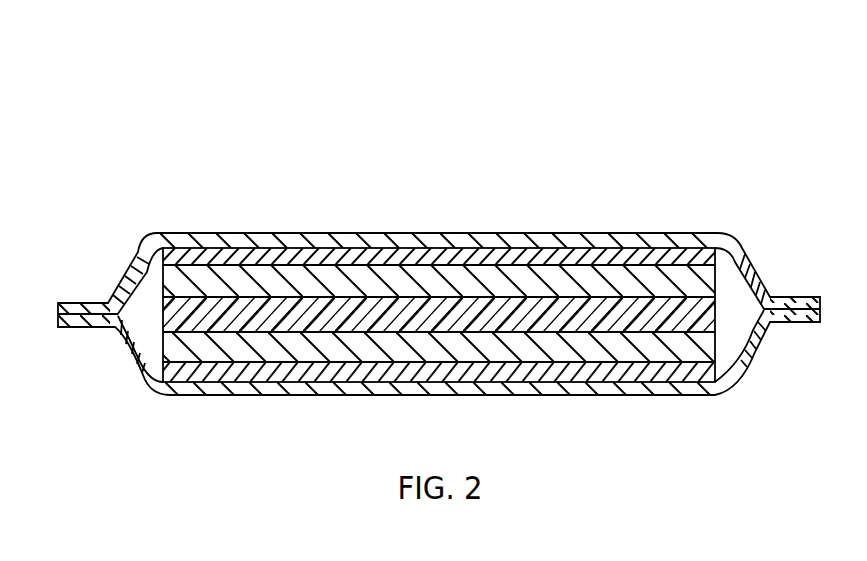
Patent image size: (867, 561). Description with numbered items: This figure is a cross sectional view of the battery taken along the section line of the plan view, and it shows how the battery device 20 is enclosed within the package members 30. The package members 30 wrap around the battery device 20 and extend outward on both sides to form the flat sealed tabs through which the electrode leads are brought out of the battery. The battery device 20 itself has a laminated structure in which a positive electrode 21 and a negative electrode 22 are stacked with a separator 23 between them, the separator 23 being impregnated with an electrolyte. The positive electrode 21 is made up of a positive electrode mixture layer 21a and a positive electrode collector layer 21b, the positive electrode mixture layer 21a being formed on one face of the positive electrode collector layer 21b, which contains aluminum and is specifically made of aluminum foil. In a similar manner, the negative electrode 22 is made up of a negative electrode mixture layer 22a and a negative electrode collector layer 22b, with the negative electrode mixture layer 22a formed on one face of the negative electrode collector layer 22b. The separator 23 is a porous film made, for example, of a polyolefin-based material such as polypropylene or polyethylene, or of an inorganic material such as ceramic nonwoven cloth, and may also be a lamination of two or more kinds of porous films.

The battery device 20 is at (720, 98).
The positive electrode 21 is at (380, 159).
The positive electrode mixture layer 21a is at (208, 275).
The positive electrode collector layer 21b is at (317, 256).
The negative electrode 22 is at (617, 163).
The negative electrode mixture layer 22a is at (447, 340).
The negative electrode collector layer 22b is at (553, 370).
The separator 23 is at (676, 307).
The package members 30 is at (74, 322).